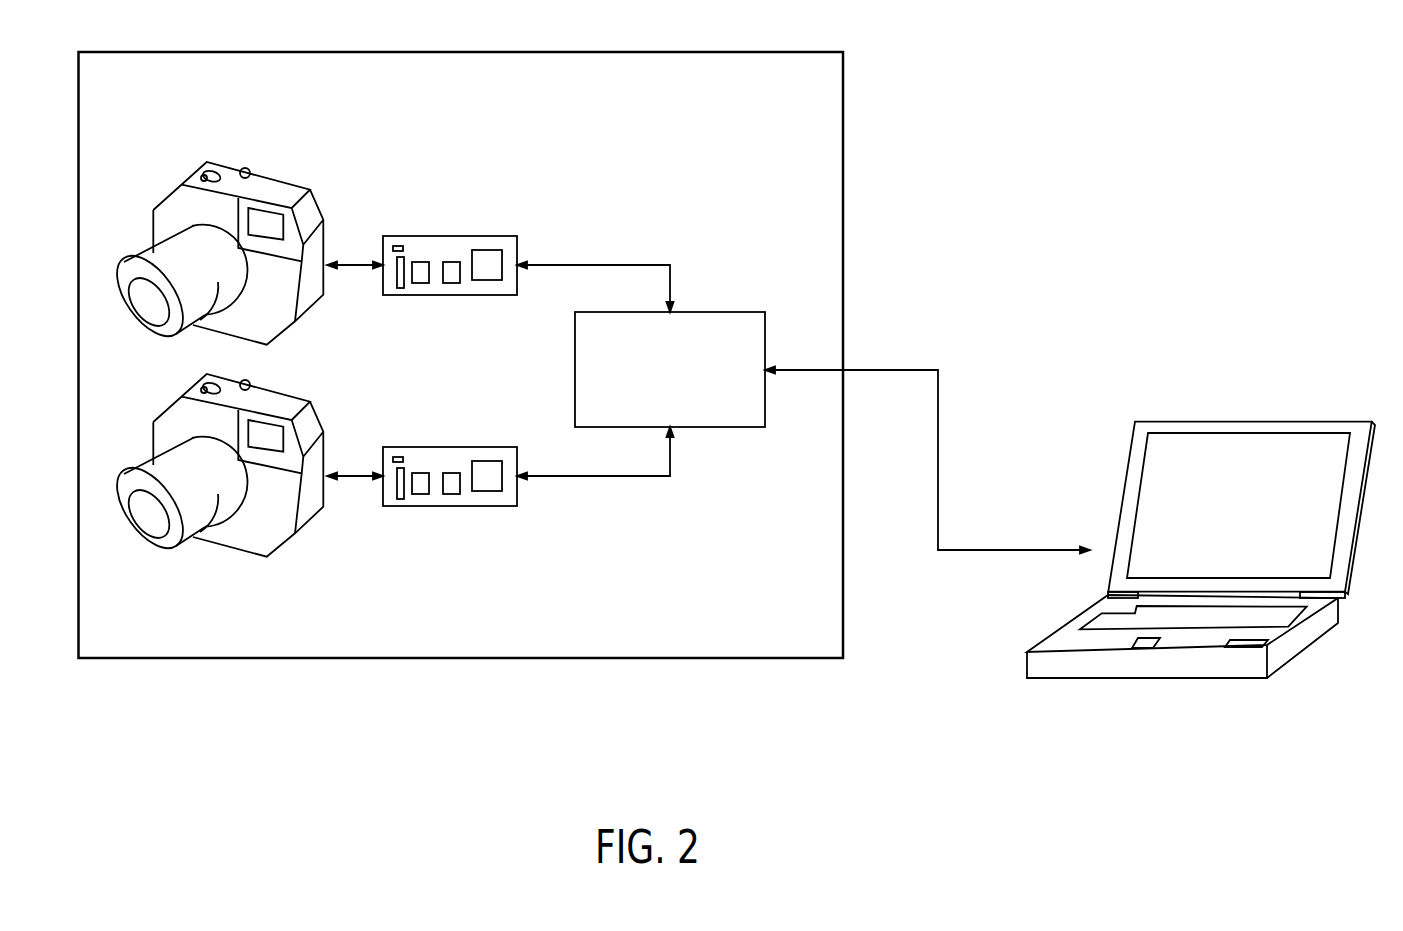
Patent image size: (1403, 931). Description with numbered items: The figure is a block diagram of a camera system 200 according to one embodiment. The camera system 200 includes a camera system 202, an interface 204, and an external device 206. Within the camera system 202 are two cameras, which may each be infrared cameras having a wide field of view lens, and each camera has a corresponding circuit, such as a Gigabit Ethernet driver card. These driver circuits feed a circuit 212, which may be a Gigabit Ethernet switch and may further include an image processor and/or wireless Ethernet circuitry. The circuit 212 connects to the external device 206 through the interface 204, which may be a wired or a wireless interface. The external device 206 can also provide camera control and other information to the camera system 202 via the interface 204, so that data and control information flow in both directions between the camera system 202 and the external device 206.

The camera system 200 is at (1008, 722).
The camera system 202 is at (177, 660).
The interface 204 is at (938, 440).
The external device 206 is at (1333, 420).
The circuit 212 is at (742, 428).